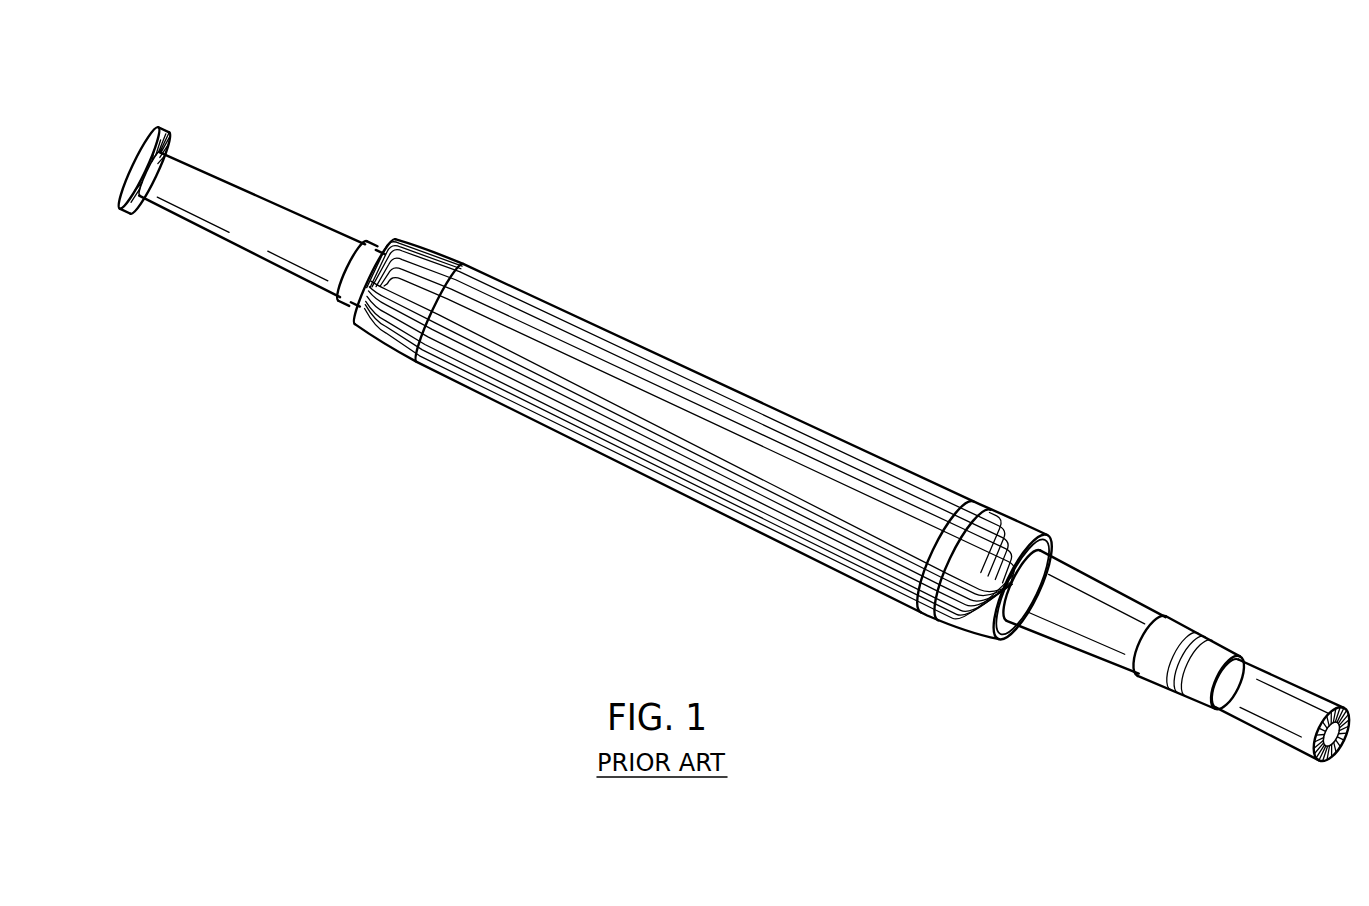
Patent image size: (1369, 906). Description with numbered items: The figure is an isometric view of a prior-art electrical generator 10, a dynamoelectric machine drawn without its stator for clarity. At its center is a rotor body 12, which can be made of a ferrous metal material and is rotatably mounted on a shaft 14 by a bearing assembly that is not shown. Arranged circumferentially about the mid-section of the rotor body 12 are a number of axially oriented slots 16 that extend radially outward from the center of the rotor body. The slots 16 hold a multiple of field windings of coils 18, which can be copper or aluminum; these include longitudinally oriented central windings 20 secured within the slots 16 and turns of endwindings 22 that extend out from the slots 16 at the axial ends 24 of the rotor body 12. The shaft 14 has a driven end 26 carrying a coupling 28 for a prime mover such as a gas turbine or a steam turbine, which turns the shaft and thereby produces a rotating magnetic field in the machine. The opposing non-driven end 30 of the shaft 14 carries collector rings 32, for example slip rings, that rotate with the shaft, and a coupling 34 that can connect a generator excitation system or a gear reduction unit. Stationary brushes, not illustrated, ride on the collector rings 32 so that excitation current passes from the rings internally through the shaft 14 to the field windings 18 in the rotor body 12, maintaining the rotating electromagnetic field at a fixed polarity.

The electrical generator 10 is at (734, 403).
The rotor body 12 is at (712, 427).
The shaft 14 is at (378, 243).
The slots 16 is at (475, 385).
The field windings of coils 18 is at (855, 545).
The central windings 20 is at (583, 397).
The endwindings 22 is at (358, 335).
The axial ends 24 is at (457, 238).
The driven end 26 is at (280, 200).
The coupling 28 is at (166, 130).
The non-driven end 30 is at (1130, 600).
The collector rings 32 is at (1186, 684).
The coupling 34 is at (1312, 697).